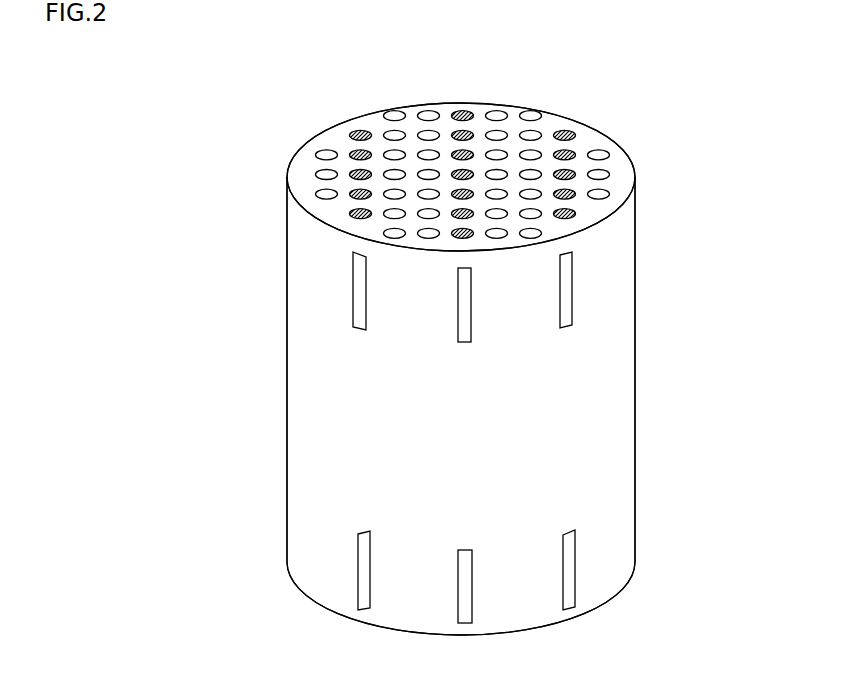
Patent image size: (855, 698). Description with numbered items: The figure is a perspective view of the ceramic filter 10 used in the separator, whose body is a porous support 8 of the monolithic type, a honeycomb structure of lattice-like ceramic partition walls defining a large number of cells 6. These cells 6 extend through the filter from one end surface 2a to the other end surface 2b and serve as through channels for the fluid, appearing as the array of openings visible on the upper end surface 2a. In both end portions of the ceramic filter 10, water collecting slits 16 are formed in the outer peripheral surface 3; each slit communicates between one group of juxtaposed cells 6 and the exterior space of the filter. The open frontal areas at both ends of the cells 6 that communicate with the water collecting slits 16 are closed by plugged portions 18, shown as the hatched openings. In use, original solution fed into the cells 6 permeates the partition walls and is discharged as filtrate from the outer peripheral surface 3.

The ceramic filter 10 is at (700, 97).
The one end surface 2a is at (589, 136).
The other end surface 2b is at (360, 623).
The outer peripheral surface 3 is at (605, 405).
The cells 6 is at (529, 131).
The porous support 8 is at (605, 355).
The water collecting slits 16 is at (358, 288).
The plugged portions 18 is at (362, 131).